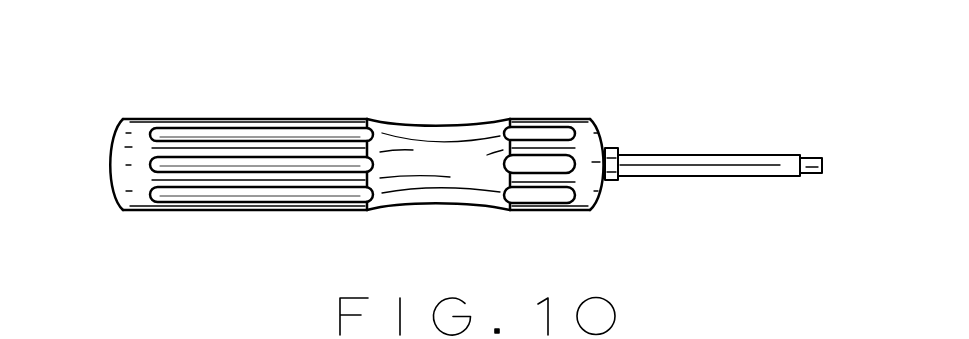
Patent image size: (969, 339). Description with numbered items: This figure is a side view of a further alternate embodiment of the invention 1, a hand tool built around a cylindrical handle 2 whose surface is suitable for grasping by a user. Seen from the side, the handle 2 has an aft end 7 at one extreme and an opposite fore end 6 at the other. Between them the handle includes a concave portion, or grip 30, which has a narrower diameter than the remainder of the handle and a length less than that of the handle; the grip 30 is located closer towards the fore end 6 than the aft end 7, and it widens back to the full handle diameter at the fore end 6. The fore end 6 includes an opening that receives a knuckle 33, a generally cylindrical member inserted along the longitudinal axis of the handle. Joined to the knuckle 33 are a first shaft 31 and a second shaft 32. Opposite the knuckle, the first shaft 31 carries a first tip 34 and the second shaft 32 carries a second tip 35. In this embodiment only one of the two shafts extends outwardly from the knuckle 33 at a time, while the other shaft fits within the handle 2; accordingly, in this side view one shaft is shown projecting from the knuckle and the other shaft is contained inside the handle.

The invention 1 is at (481, 124).
The handle 2 is at (334, 127).
The aft end 7 is at (110, 166).
The grip 30 is at (433, 130).
The fore end 6 is at (597, 127).
The knuckle 33 is at (617, 147).
The first shaft 31 is at (709, 119).
The second shaft 32 is at (679, 155).
The first tip 34 is at (856, 135).
The second tip 35 is at (815, 157).